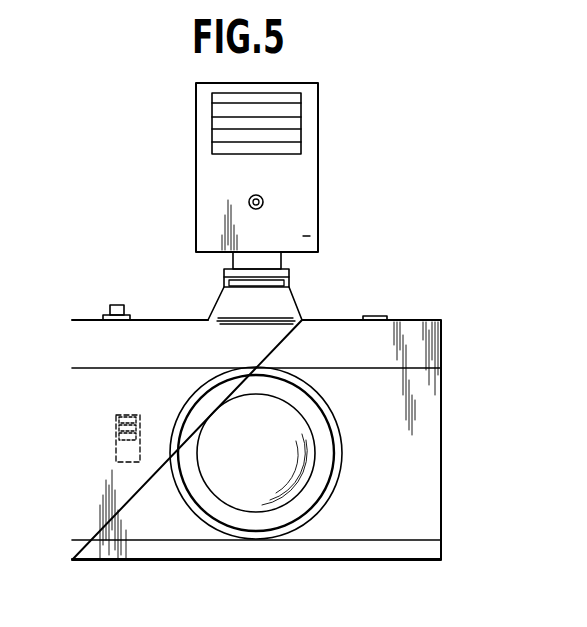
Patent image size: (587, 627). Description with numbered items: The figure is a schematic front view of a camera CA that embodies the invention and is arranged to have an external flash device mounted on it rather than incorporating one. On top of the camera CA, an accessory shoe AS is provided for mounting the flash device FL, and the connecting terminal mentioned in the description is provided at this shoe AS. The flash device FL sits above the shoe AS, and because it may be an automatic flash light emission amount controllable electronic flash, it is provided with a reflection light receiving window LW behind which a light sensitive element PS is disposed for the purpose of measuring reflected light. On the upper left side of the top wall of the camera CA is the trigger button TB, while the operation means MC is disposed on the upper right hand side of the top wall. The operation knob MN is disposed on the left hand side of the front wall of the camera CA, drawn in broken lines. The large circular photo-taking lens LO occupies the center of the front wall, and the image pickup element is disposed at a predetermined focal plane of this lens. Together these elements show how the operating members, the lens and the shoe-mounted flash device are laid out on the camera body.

The camera CA is at (447, 317).
The flash device FL is at (308, 196).
The reflection light receiving window LW is at (263, 200).
The photosensor PS is at (307, 236).
The accessory shoe AS is at (290, 283).
The trigger button TB is at (112, 305).
The operation means MC is at (370, 316).
The operation knob MN is at (115, 425).
The photographing lens LO is at (237, 500).